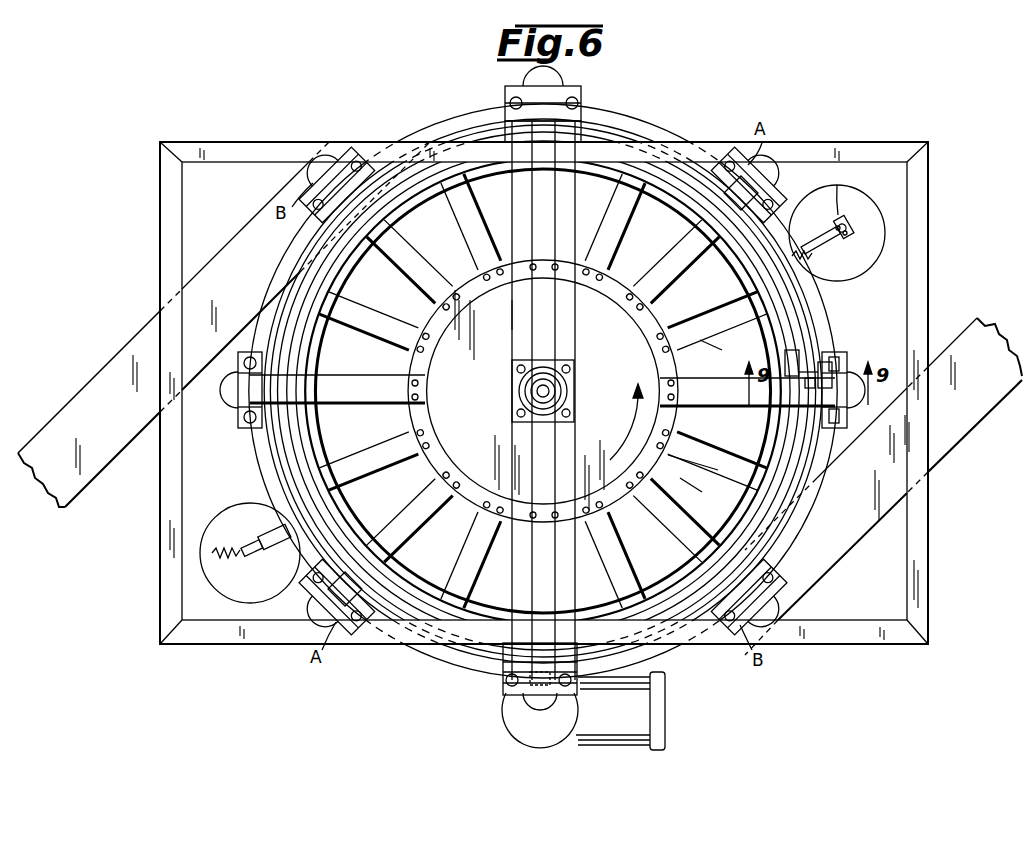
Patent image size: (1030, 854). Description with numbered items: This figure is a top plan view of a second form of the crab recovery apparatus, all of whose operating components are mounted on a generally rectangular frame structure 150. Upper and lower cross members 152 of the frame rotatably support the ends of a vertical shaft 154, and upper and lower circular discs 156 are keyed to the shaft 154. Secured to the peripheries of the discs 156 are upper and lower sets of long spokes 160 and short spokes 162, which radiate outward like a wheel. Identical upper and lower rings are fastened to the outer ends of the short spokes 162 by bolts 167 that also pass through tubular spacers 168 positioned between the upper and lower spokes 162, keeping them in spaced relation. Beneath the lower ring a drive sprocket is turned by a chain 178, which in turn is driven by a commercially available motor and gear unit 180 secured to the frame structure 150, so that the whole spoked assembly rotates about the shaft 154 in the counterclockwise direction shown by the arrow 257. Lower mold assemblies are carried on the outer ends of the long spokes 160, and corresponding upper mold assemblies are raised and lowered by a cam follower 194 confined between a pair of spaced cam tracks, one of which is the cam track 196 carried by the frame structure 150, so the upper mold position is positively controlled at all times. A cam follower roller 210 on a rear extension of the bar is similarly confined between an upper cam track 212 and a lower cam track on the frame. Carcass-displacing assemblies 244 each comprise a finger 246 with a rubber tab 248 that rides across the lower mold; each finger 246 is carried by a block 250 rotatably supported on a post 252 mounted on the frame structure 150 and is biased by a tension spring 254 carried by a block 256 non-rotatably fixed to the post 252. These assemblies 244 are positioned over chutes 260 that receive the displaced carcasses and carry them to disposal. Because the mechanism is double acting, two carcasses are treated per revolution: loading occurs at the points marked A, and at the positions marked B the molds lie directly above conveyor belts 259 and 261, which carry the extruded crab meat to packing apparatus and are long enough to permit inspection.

The frame structure 150 is at (816, 142).
The cross member 152 is at (530, 445).
The vertical shaft 154 is at (560, 390).
The circular disc 156 is at (601, 350).
The long spoke 160 is at (532, 207).
The short spoke 162 is at (447, 202).
The bolt 167 is at (699, 488).
The tubular spacer 168 is at (716, 460).
The chain 178 is at (440, 656).
The motor and gear unit 180 is at (594, 744).
The cam follower 194 is at (845, 388).
The cam track 196 is at (808, 352).
The cam follower roller 210 is at (800, 352).
The upper cam track 212 is at (718, 346).
The assembly 244 is at (846, 224).
The finger 246 is at (804, 245).
The rubber tab 248 is at (770, 207).
The block 250 is at (838, 190).
The post 252 is at (838, 224).
The tension spring 254 is at (828, 250).
The block 256 is at (847, 235).
The arrow 257 is at (668, 418).
The conveyor belt 259 is at (252, 226).
The chute 260 is at (872, 280).
The conveyor belt 261 is at (822, 570).